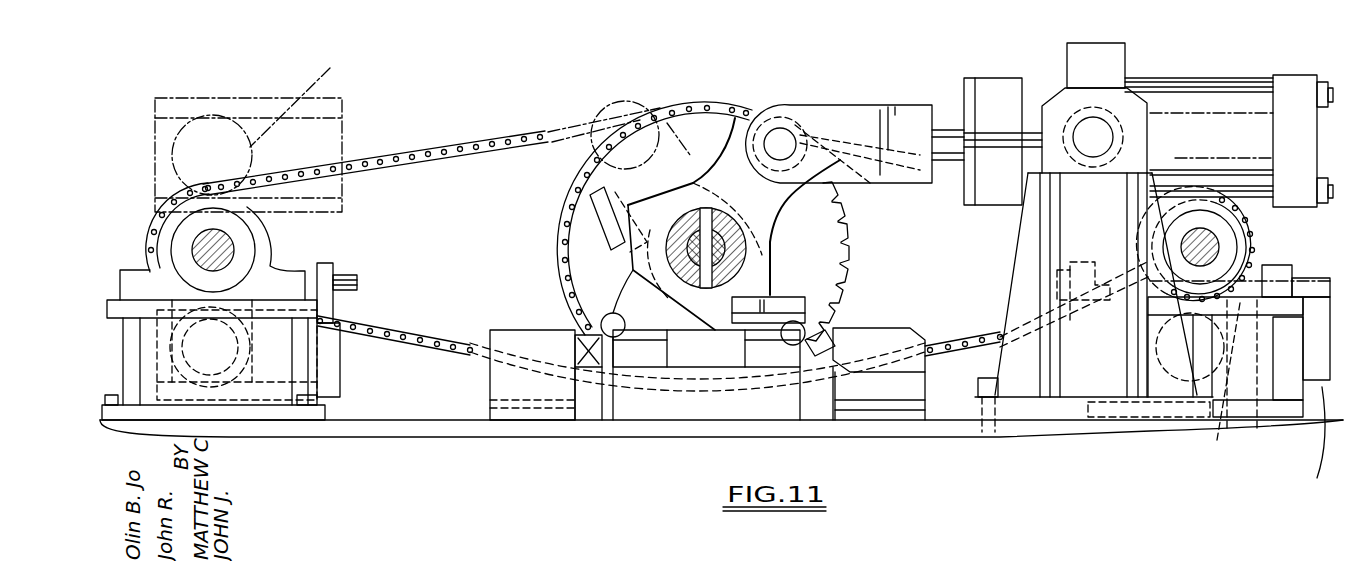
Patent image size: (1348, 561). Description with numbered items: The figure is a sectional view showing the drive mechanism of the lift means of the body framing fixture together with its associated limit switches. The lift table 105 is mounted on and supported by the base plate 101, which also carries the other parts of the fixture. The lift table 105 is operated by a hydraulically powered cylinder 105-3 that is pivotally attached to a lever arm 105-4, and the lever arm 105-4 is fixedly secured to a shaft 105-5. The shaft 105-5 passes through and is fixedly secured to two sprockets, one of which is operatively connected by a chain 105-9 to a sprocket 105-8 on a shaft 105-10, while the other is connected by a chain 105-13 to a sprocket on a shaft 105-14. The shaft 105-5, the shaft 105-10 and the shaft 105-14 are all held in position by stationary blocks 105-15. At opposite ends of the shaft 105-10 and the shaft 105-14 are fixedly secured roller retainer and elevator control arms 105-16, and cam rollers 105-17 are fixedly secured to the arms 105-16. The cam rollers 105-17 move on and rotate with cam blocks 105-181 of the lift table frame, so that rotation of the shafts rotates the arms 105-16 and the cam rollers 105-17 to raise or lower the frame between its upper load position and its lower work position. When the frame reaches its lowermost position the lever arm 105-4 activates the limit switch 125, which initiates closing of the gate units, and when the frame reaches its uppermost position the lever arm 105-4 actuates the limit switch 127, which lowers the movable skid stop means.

The base plate 101 is at (512, 425).
The lift table 105 is at (501, 134).
The hydraulically powered cylinder 105-3 is at (1000, 56).
The lever arm 105-4 is at (735, 118).
The shaft 105-5 is at (727, 256).
The sprocket 105-8 is at (1253, 240).
The chain 105-9 is at (973, 343).
The shaft 105-10 is at (1178, 240).
The chain 105-13 is at (453, 148).
The shaft 105-14 is at (262, 235).
The stationary blocks 105-15 is at (250, 246).
The roller retainer and elevator control arms 105-16 is at (307, 264).
The cam rollers 105-17 is at (1217, 440).
The cam blocks 105-181 is at (203, 98).
The limit switch 125 is at (573, 330).
The limit switch 127 is at (880, 340).